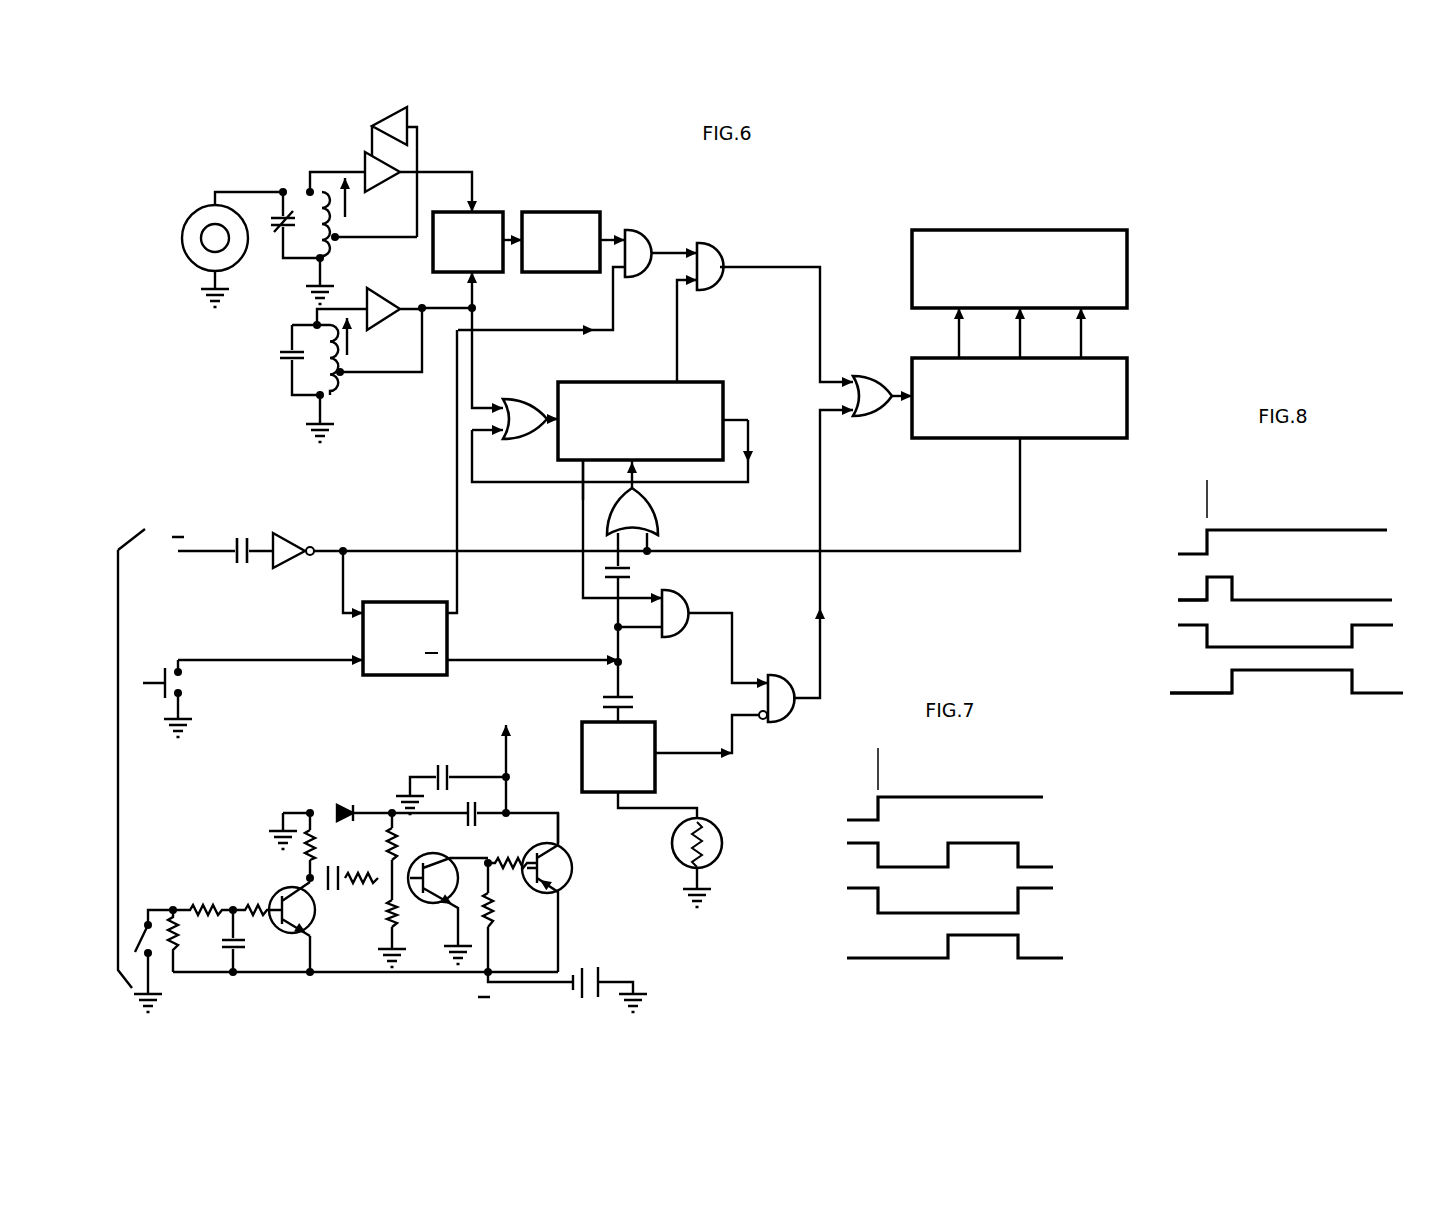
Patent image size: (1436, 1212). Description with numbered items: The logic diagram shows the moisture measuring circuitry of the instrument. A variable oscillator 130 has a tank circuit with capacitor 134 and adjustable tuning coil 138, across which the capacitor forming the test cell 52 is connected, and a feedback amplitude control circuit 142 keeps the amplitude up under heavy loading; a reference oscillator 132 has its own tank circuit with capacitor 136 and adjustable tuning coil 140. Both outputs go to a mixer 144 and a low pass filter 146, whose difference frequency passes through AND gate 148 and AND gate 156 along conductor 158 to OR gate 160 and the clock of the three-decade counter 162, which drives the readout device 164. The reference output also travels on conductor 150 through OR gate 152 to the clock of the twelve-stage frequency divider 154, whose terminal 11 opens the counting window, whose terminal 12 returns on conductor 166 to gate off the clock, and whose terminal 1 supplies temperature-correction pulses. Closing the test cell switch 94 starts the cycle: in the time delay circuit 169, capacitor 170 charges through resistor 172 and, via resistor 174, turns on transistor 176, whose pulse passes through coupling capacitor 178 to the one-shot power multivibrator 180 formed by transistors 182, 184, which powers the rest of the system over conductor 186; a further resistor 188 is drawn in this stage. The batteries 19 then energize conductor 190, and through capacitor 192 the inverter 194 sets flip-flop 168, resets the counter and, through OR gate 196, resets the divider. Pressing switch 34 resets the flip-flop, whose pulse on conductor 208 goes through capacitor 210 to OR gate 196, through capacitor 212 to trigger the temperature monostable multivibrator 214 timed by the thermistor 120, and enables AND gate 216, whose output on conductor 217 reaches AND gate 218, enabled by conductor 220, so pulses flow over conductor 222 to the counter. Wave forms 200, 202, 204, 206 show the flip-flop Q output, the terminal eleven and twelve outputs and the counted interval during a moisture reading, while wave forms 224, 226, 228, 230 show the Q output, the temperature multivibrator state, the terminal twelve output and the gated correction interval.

In FIG. 6, the test cell 52 is at (182, 235).
In FIG. 6, the capacitor 134 is at (282, 226).
In FIG. 6, the adjustable tuning coil 138 is at (338, 236).
In FIG. 6, the variable oscillator 130 is at (362, 158).
In FIG. 6, the feedback amplitude control circuit 142 is at (376, 112).
In FIG. 6, the reference oscillator 132 is at (384, 286).
In FIG. 6, the capacitor 136 is at (280, 355).
In FIG. 6, the adjustable tuning coil 140 is at (342, 372).
In FIG. 6, the mixer 144 is at (490, 212).
In FIG. 6, the low pass filter 146 is at (570, 212).
In FIG. 6, the AND gate 148 is at (652, 245).
In FIG. 6, the AND gate 156 is at (720, 255).
In FIG. 6, the conductor 158 is at (820, 328).
In FIG. 6, the output terminal 11 is at (680, 375).
In FIG. 6, the readout device 164 is at (1127, 280).
In FIG. 6, the three-decade counter 162 is at (1127, 400).
In FIG. 6, the OR gate 160 is at (868, 418).
In FIG. 6, the 12 stage frequency divider 154 is at (590, 382).
In FIG. 6, the conductor 150 is at (472, 386).
In FIG. 6, the OR gate 152 is at (520, 440).
In FIG. 6, the output terminal 12 is at (728, 420).
In FIG. 6, the output terminal 1 is at (583, 462).
In FIG. 6, the conductor 166 is at (748, 482).
In FIG. 6, the OR gate 196 is at (658, 515).
In FIG. 6, the capacitor 210 is at (633, 573).
In FIG. 6, the AND gate 216 is at (690, 612).
In FIG. 6, the conductor 217 is at (733, 630).
In FIG. 6, the conductor 222 is at (823, 582).
In FIG. 6, the capacitor 212 is at (633, 697).
In FIG. 6, the AND gate 218 is at (790, 716).
In FIG. 8, the AND gate 218 is at (1177, 692).
In FIG. 6, the temperature monostable multivibrator 214 is at (655, 725).
In FIG. 8, the temperature monostable multivibrator 214 is at (1169, 588).
In FIG. 6, the conductor 220 is at (725, 757).
In FIG. 6, the thermistor 120 is at (722, 841).
In FIG. 6, the capacitor 192 is at (237, 545).
In FIG. 6, the inverter 194 is at (285, 533).
In FIG. 6, the conductor 190 is at (215, 553).
In FIG. 6, the flip-flop 168 is at (410, 675).
In FIG. 6, the switch 34 is at (163, 688).
In FIG. 8, the switch 34 is at (1212, 486).
In FIG. 6, the test cell switch 94 is at (140, 938).
In FIG. 7, the test cell switch 94 is at (880, 760).
In FIG. 6, the resistor 172 is at (205, 905).
In FIG. 6, the resistor 188 is at (178, 932).
In FIG. 6, the capacitor 170 is at (245, 944).
In FIG. 6, the resistor 174 is at (285, 893).
In FIG. 6, the transistor 176 is at (312, 920).
In FIG. 6, the coupling capacitor 178 is at (338, 872).
In FIG. 6, the transistor 182 is at (436, 905).
In FIG. 6, the transistor 184 is at (573, 868).
In FIG. 6, the one-shot power multivibrator 180 is at (572, 889).
In FIG. 6, the conductor 186 is at (533, 751).
In FIG. 6, the time delay circuit 169 is at (250, 975).
In FIG. 6, the batteries 19 is at (600, 970).
In FIG. 6, the conductor 208 is at (520, 660).
In FIG. 7, the wave form 200 is at (1000, 797).
In FIG. 7, the wave form 202 is at (955, 843).
In FIG. 7, the wave form 204 is at (970, 911).
In FIG. 7, the wave form 206 is at (983, 937).
In FIG. 8, the wave form 224 is at (1305, 530).
In FIG. 8, the wave form 226 is at (1300, 600).
In FIG. 8, the wave form 228 is at (1295, 647).
In FIG. 8, the wave form 230 is at (1305, 672).